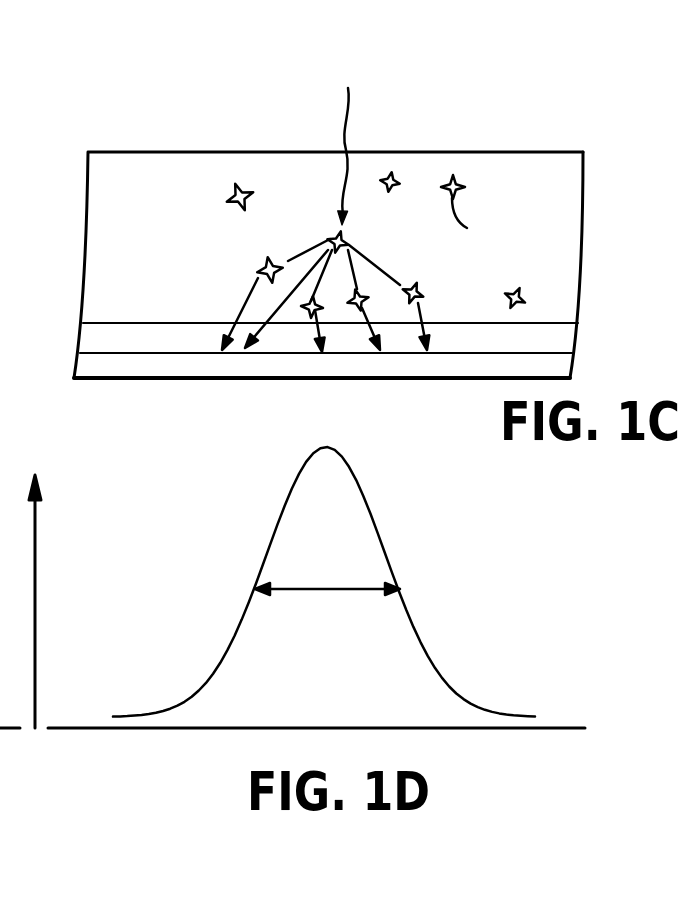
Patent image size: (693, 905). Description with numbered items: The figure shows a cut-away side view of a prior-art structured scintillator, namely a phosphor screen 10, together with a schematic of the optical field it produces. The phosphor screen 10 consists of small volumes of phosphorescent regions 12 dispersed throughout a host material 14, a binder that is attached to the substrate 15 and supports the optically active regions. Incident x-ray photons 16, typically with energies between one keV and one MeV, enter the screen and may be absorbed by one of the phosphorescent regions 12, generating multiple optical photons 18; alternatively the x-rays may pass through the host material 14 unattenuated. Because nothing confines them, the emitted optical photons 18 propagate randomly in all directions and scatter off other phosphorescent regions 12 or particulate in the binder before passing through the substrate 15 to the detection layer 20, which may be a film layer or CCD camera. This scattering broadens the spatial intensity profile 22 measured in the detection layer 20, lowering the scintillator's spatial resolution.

In FIG. 1C, the phosphor screen 10 is at (545, 98).
In FIG. 1C, the phosphorescent regions 12 is at (421, 283).
In FIG. 1C, the host material 14 is at (565, 236).
In FIG. 1C, the substrate 15 is at (560, 337).
In FIG. 1C, the incident x-ray photons 16 is at (350, 128).
In FIG. 1C, the optical photons 18 is at (308, 248).
In FIG. 1C, the detection layer 20 is at (547, 370).
In FIG. 1D, the spatial intensity profile 22 is at (430, 526).